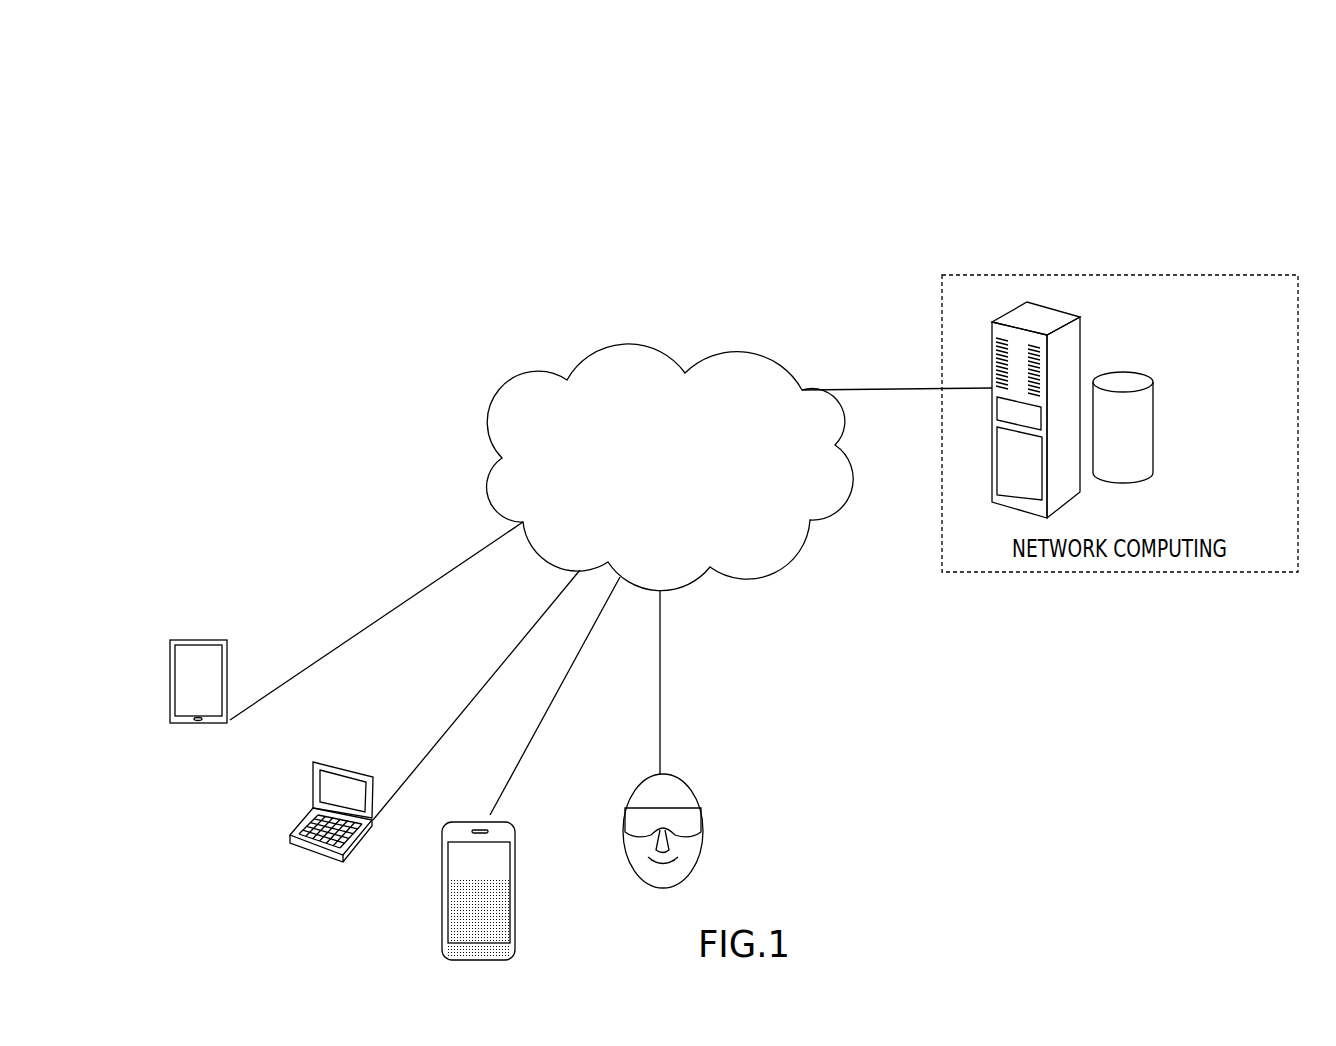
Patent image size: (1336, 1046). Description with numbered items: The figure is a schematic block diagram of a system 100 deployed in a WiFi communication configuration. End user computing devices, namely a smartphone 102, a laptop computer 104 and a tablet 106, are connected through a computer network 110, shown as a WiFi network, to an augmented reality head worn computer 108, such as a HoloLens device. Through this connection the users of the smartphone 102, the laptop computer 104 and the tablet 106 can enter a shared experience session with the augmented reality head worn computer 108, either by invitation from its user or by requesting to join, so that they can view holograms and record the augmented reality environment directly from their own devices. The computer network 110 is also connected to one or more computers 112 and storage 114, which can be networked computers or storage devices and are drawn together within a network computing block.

The system 100 is at (877, 128).
The smartphone 102 is at (515, 863).
The laptop computer 104 is at (350, 770).
The tablet 106 is at (210, 640).
The augmented reality head worn computer 108 is at (688, 779).
The computer network 110 is at (695, 268).
The computers 112 is at (1060, 319).
The storage 114 is at (1118, 378).